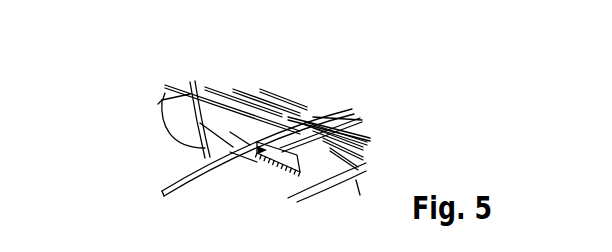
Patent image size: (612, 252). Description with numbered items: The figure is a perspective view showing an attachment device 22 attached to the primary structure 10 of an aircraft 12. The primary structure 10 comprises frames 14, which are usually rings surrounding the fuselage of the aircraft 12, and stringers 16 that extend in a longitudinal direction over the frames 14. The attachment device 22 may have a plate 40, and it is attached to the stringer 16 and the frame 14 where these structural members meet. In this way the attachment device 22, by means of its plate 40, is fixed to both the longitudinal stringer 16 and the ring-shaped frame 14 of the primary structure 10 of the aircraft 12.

The primary structure 10 is at (138, 79).
The aircraft 12 is at (290, 66).
The frame 14 is at (205, 170).
The stringer 16 is at (227, 97).
The attachment device 22 is at (190, 147).
The plate 40 is at (289, 150).